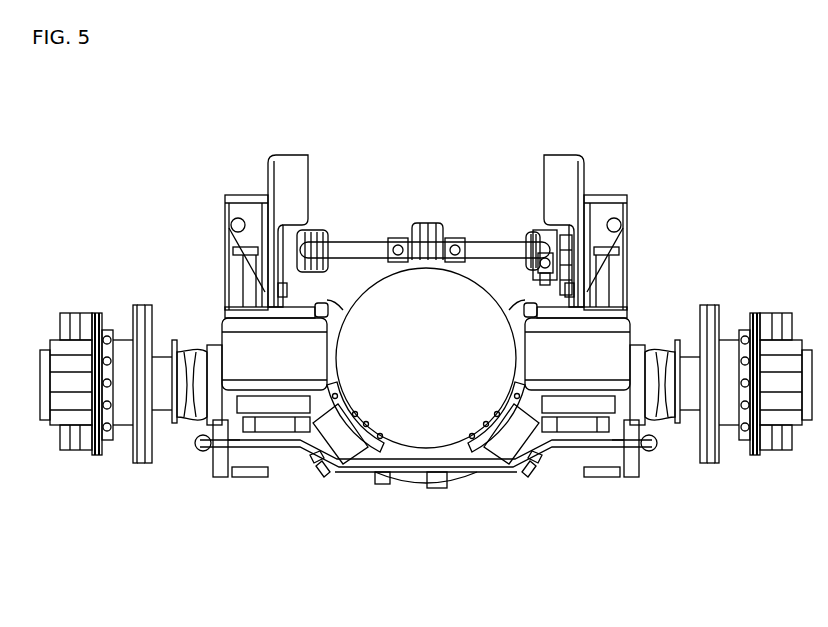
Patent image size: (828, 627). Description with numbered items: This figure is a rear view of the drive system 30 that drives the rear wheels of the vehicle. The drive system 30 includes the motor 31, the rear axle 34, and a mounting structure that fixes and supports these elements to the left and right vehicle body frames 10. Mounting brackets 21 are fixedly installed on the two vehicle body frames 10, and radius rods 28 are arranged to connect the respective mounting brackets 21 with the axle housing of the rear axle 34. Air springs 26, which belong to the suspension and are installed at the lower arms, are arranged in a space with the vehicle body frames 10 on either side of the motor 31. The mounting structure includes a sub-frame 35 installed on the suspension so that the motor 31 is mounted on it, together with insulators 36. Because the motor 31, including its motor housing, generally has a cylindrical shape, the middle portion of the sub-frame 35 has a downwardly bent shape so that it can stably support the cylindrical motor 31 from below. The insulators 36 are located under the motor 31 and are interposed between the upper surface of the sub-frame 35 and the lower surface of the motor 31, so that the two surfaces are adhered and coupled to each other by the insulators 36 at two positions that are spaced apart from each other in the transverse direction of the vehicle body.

The vehicle body frame 10 is at (584, 168).
The mounting bracket 21 is at (623, 232).
The air spring 26 is at (613, 343).
The radius rod 28 is at (357, 242).
The drive system 30 is at (390, 460).
The motor 31 is at (440, 412).
The rear axle 34 is at (660, 420).
The sub-frame 35 is at (500, 463).
The insulator 36 is at (548, 435).